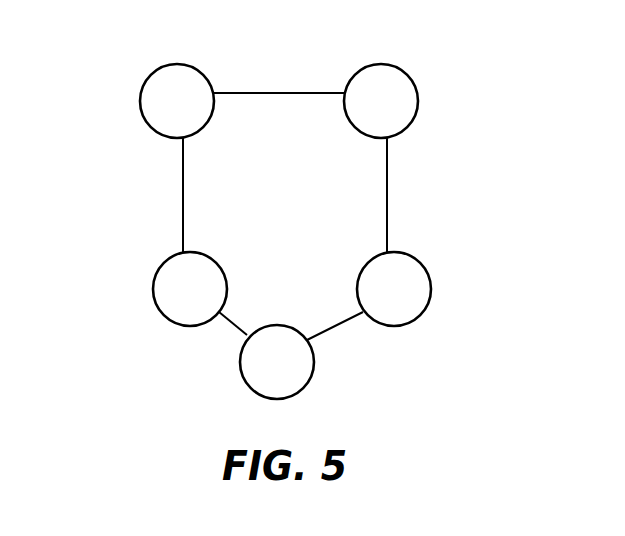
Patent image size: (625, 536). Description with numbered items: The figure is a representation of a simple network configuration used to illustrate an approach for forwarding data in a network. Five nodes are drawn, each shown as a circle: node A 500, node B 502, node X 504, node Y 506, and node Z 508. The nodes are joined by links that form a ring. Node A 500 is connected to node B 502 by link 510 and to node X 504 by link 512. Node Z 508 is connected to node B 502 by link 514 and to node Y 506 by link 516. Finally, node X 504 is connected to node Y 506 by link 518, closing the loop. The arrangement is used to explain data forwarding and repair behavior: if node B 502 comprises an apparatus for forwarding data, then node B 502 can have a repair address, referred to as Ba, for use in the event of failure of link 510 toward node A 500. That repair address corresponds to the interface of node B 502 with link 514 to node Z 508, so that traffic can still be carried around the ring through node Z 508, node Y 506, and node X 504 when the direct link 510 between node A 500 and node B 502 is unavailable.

The node A 500 is at (201, 126).
The node B 502 is at (405, 126).
The node X 504 is at (214, 314).
The node Y 506 is at (301, 386).
The node Z 508 is at (418, 314).
The link 510 is at (287, 92).
The link 512 is at (183, 180).
The link 514 is at (387, 183).
The link 516 is at (332, 327).
The link 518 is at (223, 318).